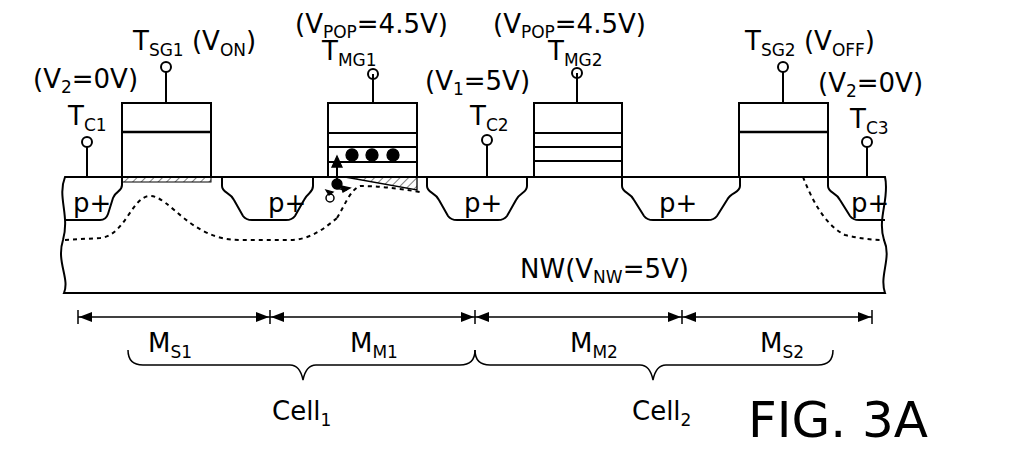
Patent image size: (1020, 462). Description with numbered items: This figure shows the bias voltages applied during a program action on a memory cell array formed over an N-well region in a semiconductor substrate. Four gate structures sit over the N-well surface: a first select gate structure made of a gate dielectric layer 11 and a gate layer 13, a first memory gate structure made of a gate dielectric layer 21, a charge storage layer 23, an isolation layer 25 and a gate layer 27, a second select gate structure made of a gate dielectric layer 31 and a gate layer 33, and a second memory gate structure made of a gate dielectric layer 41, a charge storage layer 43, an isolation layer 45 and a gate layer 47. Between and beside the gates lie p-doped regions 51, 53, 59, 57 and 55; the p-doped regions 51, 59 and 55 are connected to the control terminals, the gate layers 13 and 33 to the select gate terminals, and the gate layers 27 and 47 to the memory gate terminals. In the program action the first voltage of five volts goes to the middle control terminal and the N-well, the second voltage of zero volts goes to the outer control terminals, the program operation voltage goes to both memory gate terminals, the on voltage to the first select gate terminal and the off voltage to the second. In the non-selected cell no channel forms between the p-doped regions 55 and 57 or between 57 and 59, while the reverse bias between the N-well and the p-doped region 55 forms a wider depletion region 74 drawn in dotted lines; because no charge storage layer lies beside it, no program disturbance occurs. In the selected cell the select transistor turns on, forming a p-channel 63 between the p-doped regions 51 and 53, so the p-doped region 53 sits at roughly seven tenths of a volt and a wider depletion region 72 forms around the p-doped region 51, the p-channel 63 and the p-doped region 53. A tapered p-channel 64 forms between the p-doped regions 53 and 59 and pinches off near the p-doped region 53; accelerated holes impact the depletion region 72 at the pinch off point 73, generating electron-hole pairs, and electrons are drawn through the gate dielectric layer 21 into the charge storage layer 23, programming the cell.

The gate dielectric layer 11 is at (180, 164).
The gate layer 13 is at (200, 107).
The gate dielectric layer 21 is at (328, 166).
The charge storage layer 23 is at (328, 150).
The isolation layer 25 is at (328, 136).
The gate layer 27 is at (328, 106).
The gate dielectric layer 31 is at (797, 164).
The gate layer 33 is at (752, 110).
The gate dielectric layer 41 is at (622, 167).
The charge storage layer 43 is at (622, 150).
The isolation layer 45 is at (622, 136).
The gate layer 47 is at (622, 106).
The p-doped region 51 is at (89, 219).
The p-doped region 53 is at (295, 220).
The p-doped region 55 is at (864, 220).
The p-doped region 57 is at (713, 220).
The p-doped region 59 is at (475, 220).
The p-channel 63 is at (160, 180).
The tapered p-channel 64 is at (401, 190).
The depletion region 72 is at (239, 232).
The pinch off point 73 is at (344, 203).
The depletion region 74 is at (820, 214).